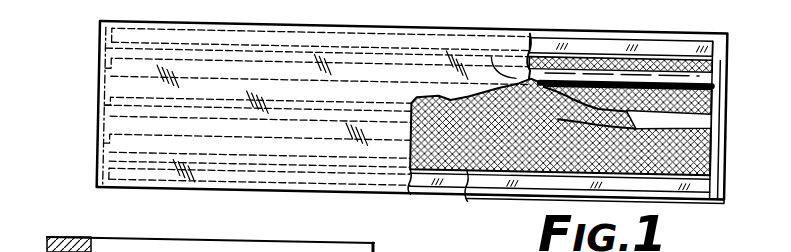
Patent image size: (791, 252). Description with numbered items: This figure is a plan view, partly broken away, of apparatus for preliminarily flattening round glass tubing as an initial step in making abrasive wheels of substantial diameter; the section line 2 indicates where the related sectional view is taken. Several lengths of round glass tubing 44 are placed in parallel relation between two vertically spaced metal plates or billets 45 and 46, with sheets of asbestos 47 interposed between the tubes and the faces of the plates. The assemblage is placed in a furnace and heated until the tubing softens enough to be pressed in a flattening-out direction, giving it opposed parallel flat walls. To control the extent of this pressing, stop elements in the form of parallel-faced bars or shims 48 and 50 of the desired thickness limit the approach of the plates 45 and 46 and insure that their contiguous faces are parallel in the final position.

The section line 2- 2 is at (80, 7).
The glass tubing 44 is at (110, 70).
The metal plate 45 is at (728, 47).
The metal plate 46 is at (104, 190).
The sheet of asbestos 47 is at (104, 52).
The bar or shim 48 is at (217, 31).
The bar or shim 50 is at (263, 192).